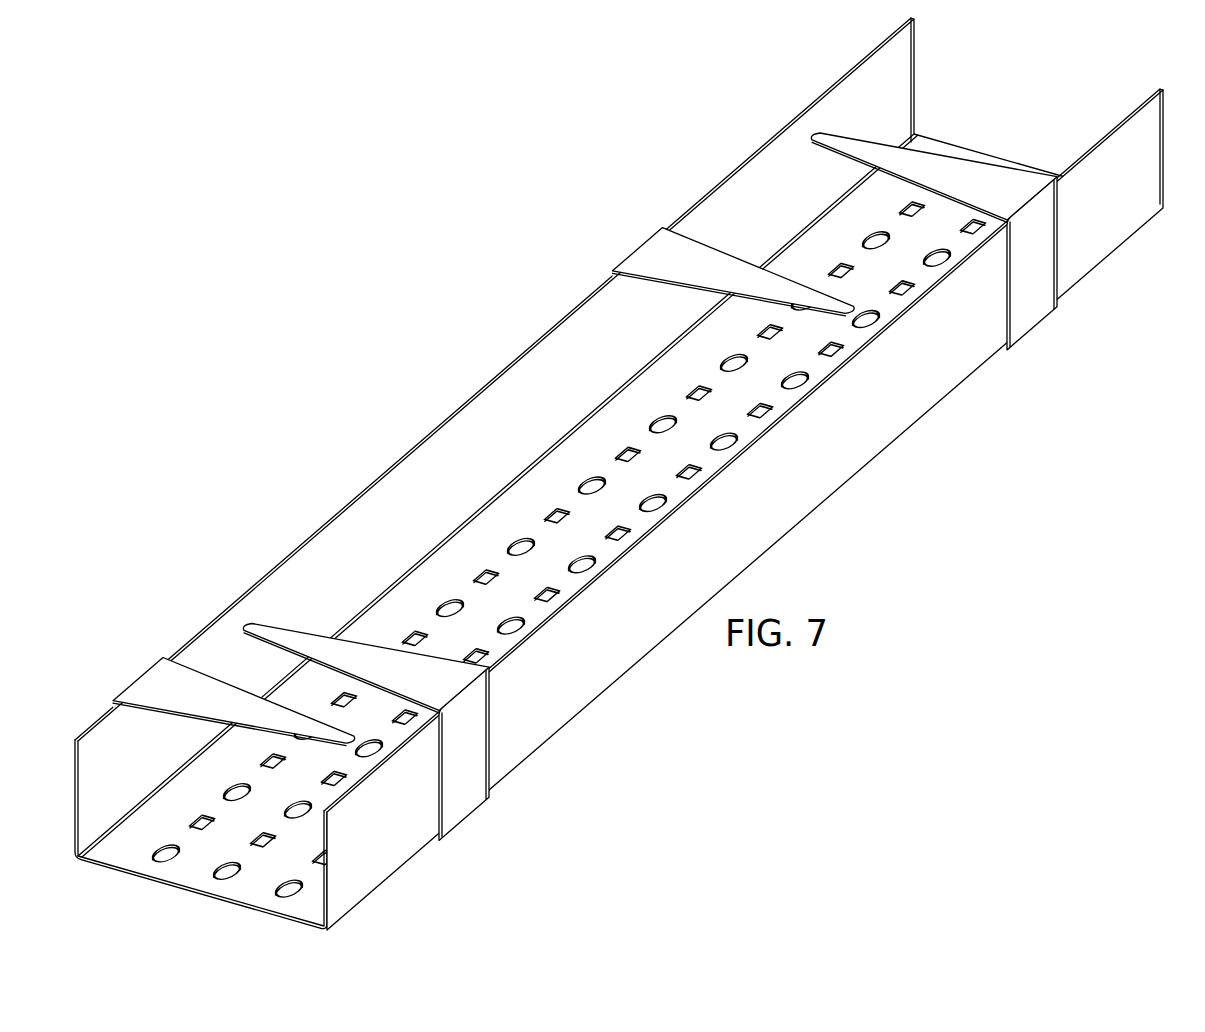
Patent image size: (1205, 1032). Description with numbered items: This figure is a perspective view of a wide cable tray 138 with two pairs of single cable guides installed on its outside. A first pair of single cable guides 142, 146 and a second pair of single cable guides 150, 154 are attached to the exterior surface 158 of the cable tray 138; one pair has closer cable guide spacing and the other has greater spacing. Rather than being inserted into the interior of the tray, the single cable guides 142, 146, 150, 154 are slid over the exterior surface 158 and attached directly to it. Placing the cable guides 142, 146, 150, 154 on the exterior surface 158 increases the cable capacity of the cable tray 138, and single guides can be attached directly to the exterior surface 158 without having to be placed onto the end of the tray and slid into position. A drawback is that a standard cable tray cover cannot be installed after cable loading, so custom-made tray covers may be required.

The wide cable tray 138 is at (619, 474).
The single cable guide 142 is at (207, 690).
The single cable guide 146 is at (463, 771).
The single cable guide 150 is at (628, 262).
The single cable guide 154 is at (1033, 302).
The exterior surface 158 is at (767, 514).